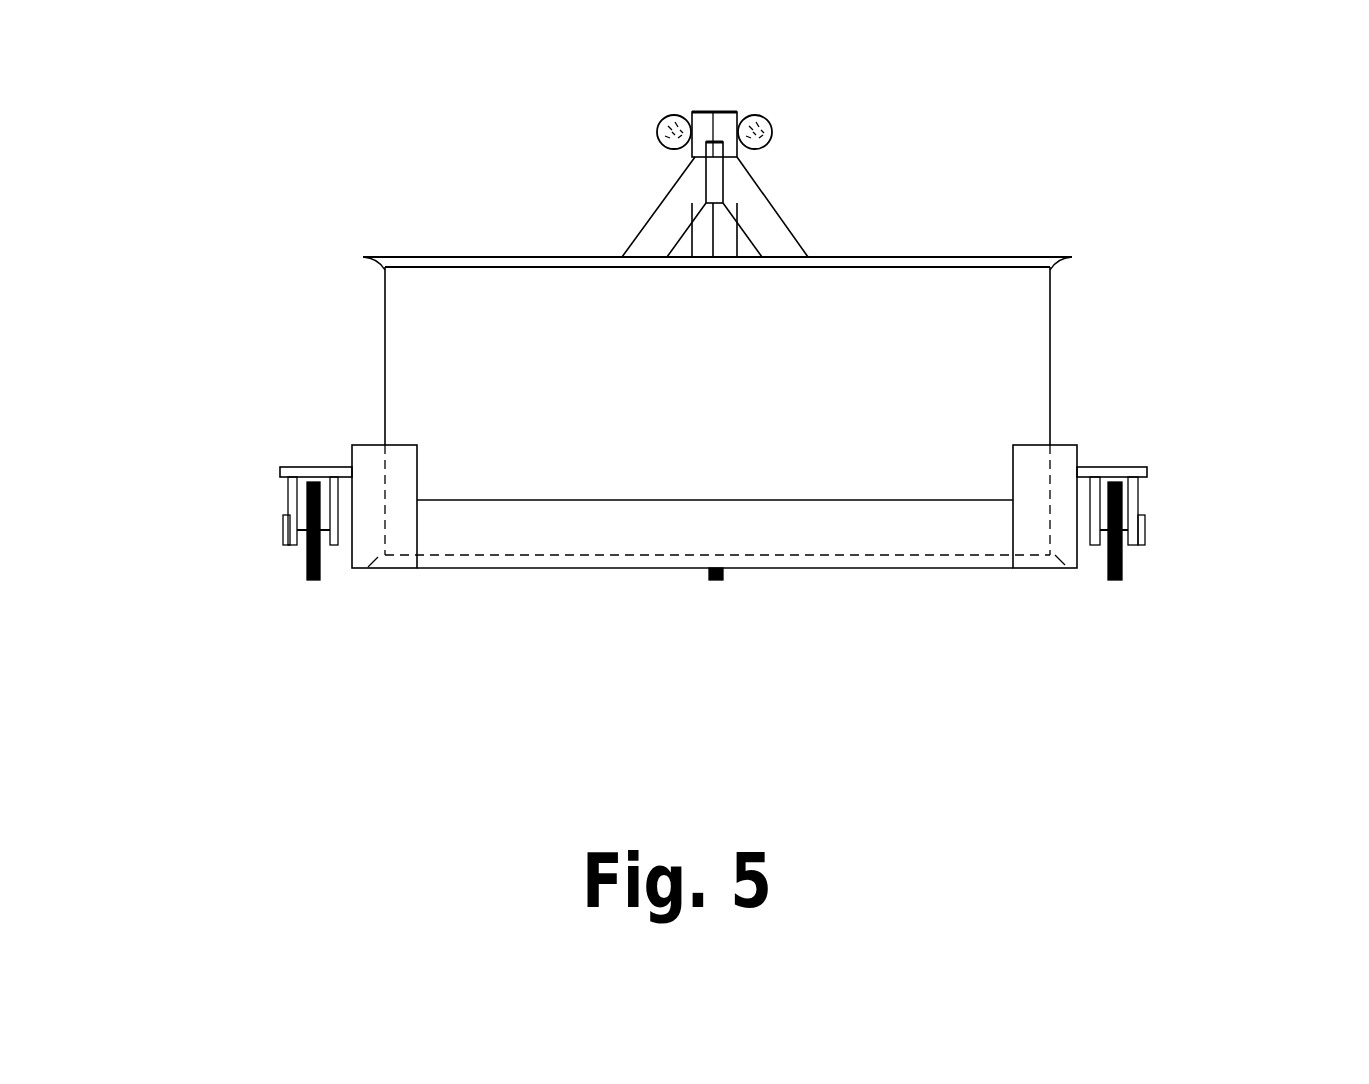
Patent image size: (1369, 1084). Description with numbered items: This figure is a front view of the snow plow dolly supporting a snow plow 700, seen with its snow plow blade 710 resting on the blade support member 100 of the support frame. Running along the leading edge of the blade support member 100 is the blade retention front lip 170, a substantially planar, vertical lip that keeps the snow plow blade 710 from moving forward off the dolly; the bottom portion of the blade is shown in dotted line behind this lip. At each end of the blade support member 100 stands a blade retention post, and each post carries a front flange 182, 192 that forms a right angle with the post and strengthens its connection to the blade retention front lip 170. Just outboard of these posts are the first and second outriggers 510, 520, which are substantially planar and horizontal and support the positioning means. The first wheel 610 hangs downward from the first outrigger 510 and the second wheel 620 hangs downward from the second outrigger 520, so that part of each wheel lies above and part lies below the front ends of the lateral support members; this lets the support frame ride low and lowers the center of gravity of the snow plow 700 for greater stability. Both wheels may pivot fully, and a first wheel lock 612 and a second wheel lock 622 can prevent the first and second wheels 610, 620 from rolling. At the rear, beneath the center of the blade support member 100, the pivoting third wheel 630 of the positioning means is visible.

The blade support member 100 is at (430, 568).
The blade retention front lip 170 is at (832, 547).
The front flange 182 is at (1063, 450).
The front flange 192 is at (367, 452).
The first outrigger 510 is at (1148, 473).
The second outrigger 520 is at (282, 475).
The first wheel 610 is at (1123, 568).
The second wheel 620 is at (305, 570).
The first wheel lock 612 is at (1145, 523).
The second wheel lock 622 is at (282, 523).
The third wheel 630 is at (709, 580).
The snow plow 700 is at (653, 208).
The snow plow blade 710 is at (523, 345).